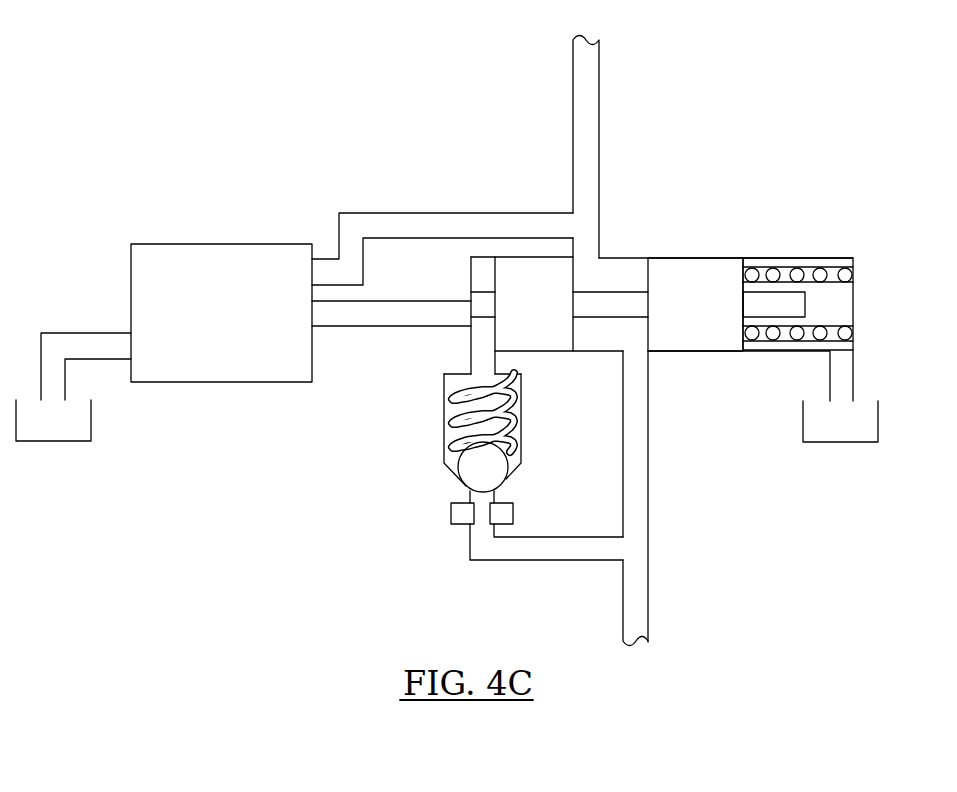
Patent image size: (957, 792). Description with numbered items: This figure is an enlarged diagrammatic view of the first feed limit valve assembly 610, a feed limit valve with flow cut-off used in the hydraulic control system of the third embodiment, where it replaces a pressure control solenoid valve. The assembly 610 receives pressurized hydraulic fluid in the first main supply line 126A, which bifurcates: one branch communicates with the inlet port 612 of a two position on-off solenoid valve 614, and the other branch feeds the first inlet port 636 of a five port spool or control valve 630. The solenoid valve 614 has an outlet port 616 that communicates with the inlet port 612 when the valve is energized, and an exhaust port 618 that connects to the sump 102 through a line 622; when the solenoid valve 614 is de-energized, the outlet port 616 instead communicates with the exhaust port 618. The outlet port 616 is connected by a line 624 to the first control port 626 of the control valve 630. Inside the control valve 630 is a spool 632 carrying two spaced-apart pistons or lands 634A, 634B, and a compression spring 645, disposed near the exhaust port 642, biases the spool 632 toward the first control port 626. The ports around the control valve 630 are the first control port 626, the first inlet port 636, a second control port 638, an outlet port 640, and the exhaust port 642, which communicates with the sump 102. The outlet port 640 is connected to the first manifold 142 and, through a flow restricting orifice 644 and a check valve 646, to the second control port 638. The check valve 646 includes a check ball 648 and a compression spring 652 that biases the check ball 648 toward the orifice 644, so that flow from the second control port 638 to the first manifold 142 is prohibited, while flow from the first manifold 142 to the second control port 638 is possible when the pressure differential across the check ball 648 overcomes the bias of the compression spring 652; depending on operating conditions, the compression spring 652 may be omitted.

The first feed limit valve assembly 610 is at (341, 62).
The solenoid valve 614 is at (224, 262).
The line 622 is at (52, 353).
The exhaust port 618 is at (128, 343).
The sump 102 is at (52, 422).
The inlet port 612 is at (314, 262).
The line 624 is at (397, 312).
The outlet port 616 is at (313, 314).
The first control port 626 is at (470, 320).
The first main supply line 126A is at (600, 90).
The first inlet port 636 is at (587, 256).
The land 634A is at (560, 322).
The land 634B is at (728, 323).
The control valve 630 is at (778, 168).
The compression spring 645 is at (793, 272).
The spool 632 is at (768, 300).
The exhaust port 642 is at (830, 373).
The outlet port 640 is at (637, 352).
The first manifold 142 is at (642, 617).
The check valve 646 is at (457, 410).
The second control port 638 is at (482, 353).
The compression spring 652 is at (505, 414).
The check ball 648 is at (495, 468).
The flow restricting orifice 644 is at (513, 510).